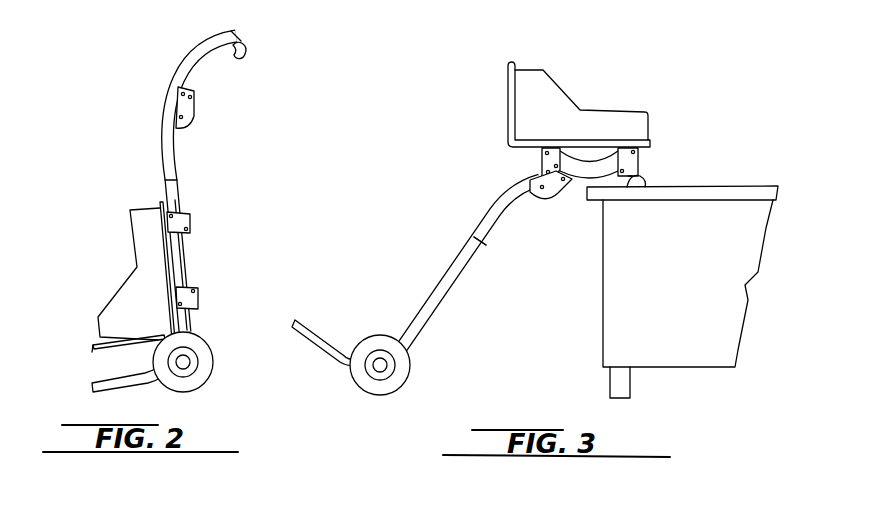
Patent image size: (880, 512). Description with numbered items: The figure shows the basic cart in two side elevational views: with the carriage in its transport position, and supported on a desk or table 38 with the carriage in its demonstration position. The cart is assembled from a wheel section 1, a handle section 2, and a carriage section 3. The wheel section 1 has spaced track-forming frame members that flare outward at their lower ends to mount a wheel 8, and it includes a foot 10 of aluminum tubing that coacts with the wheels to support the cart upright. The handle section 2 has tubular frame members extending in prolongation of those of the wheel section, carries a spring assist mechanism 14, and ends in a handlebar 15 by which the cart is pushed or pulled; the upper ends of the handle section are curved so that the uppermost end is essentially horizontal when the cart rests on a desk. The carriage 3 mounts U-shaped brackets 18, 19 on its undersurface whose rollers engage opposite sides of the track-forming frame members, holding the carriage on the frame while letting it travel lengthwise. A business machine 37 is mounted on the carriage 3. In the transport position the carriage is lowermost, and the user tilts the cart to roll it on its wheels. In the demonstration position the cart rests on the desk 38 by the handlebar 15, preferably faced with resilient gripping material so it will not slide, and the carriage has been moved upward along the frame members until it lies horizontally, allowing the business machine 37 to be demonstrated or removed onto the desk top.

In FIG. 2, the wheel section 1 is at (197, 260).
In FIG. 3, the wheel section 1 is at (445, 298).
In FIG. 3, the handle section 2 is at (505, 228).
In FIG. 2, the carriage section 3 is at (187, 132).
In FIG. 3, the carriage section 3 is at (498, 122).
In FIG. 2, the wheel 8 is at (203, 378).
In FIG. 3, the wheel 8 is at (380, 365).
In FIG. 2, the foot 10 is at (112, 388).
In FIG. 3, the foot 10 is at (315, 327).
In FIG. 2, the spring assist mechanism 14 is at (198, 103).
In FIG. 3, the spring assist mechanism 14 is at (558, 190).
In FIG. 2, the handlebar 15 is at (246, 52).
In FIG. 3, the handlebar 15 is at (647, 182).
In FIG. 2, the U-shaped bracket 18 is at (190, 214).
In FIG. 3, the U-shaped bracket 18 is at (632, 160).
In FIG. 2, the U-shaped bracket 19 is at (198, 298).
In FIG. 3, the U-shaped bracket 19 is at (542, 157).
In FIG. 2, the business machine 37 is at (137, 257).
In FIG. 3, the business machine 37 is at (573, 108).
In FIG. 3, the desk or table 38 is at (743, 280).